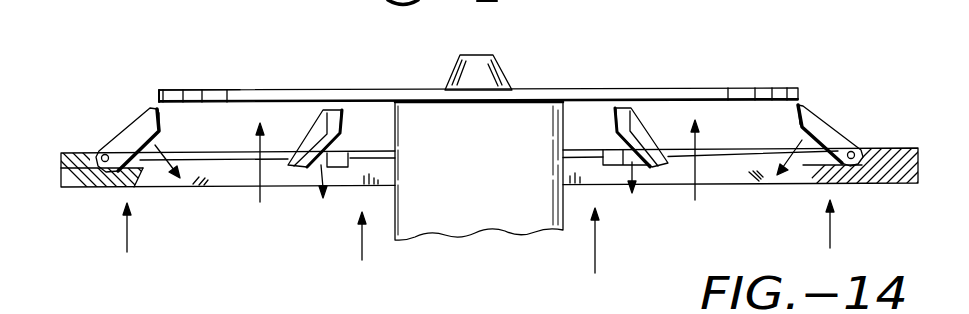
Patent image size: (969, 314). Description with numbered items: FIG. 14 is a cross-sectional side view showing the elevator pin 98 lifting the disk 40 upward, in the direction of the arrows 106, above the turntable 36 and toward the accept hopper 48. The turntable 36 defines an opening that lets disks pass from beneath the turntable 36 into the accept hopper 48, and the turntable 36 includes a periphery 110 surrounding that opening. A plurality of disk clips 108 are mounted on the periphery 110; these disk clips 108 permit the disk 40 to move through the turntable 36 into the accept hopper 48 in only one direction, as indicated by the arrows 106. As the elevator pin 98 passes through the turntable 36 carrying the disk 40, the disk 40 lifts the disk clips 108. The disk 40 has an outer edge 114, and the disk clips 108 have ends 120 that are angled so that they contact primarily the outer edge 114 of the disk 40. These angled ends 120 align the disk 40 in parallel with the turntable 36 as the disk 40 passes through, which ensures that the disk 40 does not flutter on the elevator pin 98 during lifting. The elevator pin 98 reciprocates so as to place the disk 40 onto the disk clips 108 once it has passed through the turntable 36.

The turntable 36 is at (908, 148).
The disk 40 is at (675, 88).
The accept hopper 48 is at (793, 53).
The elevator pin 98 is at (489, 175).
The arrows 106 is at (595, 257).
The disk clips 108 is at (140, 132).
The periphery 110 is at (142, 178).
The outer edge 114 is at (157, 100).
The ends 120 is at (160, 118).